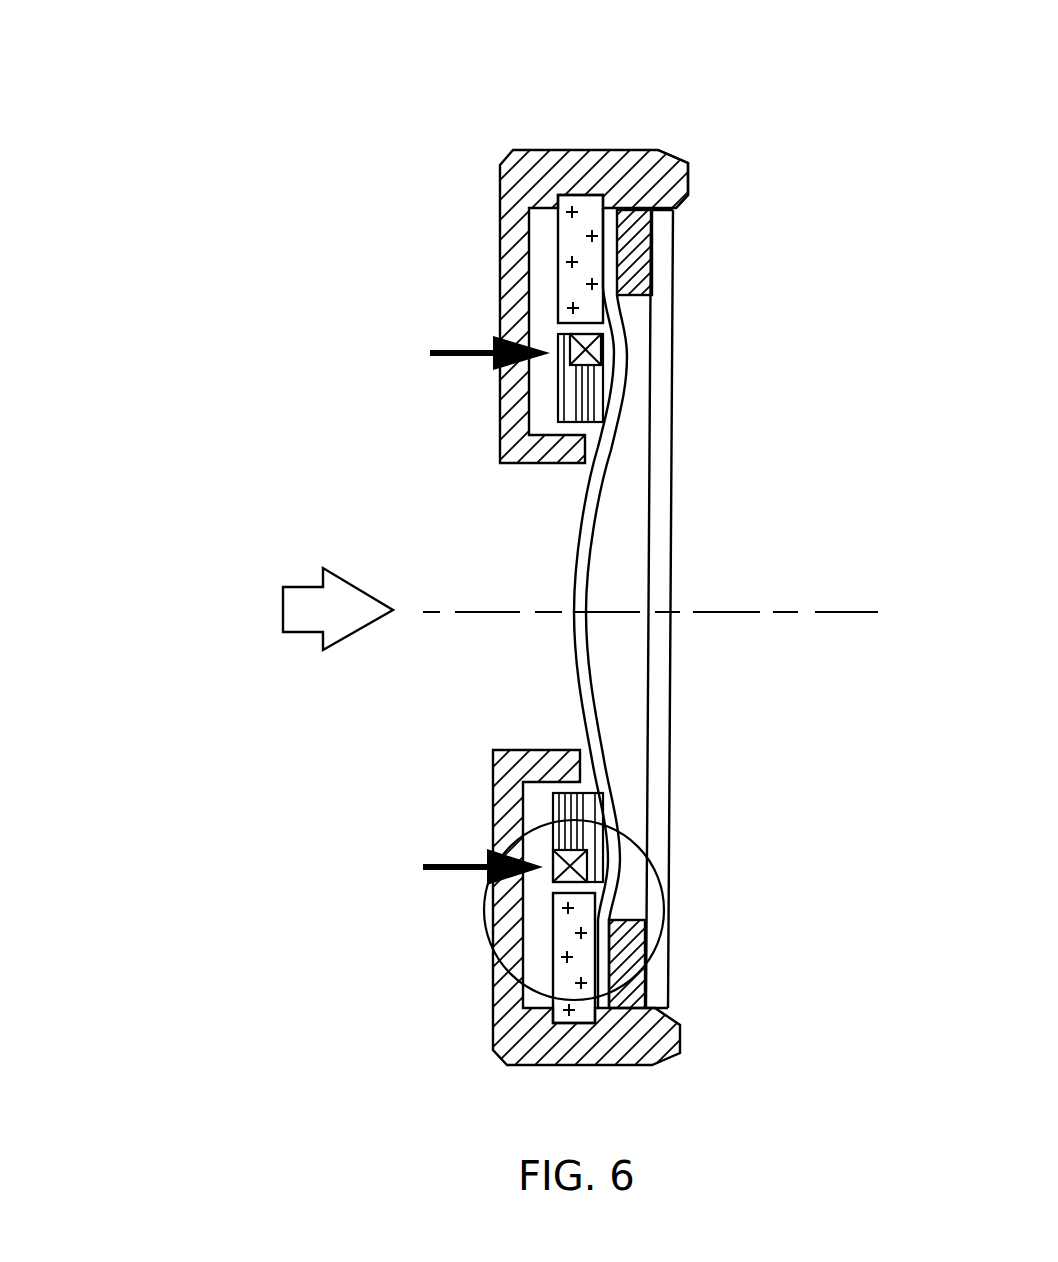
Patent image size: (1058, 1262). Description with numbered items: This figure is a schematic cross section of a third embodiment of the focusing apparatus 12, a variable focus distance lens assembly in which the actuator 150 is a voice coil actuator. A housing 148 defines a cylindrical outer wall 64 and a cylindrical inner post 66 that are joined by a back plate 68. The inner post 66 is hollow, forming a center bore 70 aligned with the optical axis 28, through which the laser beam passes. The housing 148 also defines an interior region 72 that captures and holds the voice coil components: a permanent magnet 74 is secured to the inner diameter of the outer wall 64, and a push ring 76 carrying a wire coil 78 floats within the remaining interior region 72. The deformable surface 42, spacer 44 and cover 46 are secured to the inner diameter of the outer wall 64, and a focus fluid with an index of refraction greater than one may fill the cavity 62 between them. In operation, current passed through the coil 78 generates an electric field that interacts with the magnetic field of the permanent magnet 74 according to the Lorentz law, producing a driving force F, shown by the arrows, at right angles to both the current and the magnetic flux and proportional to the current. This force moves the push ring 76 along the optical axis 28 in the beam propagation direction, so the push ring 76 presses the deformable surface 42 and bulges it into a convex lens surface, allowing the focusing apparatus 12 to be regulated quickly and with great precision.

The focusing apparatus 12 is at (492, 72).
The optical axis 28 is at (818, 614).
The deformable surface 42 is at (577, 690).
The spacer 44 is at (640, 250).
The cover 46 is at (675, 338).
The cavity 62 is at (622, 565).
The cylindrical outer wall 64 is at (585, 150).
The cylindrical inner post 66 is at (543, 463).
The back plate 68 is at (500, 258).
The center bore 70 is at (515, 661).
The interior region 72 is at (537, 965).
The permanent magnet 74 is at (572, 232).
The push ring 76 is at (553, 806).
The wire coil 78 is at (585, 358).
The housing 148 is at (682, 158).
The actuator 150 is at (657, 947).